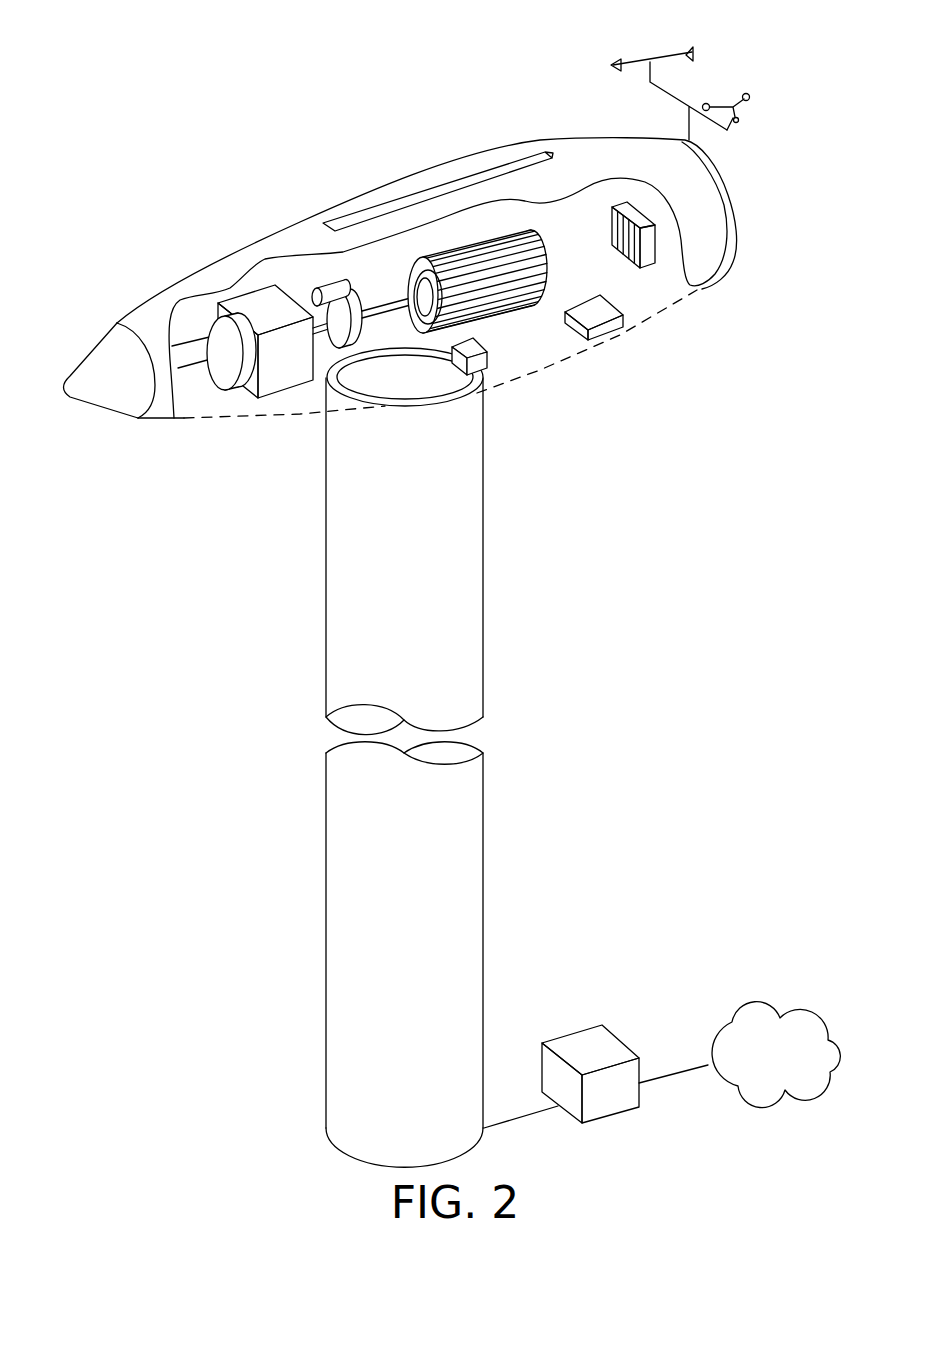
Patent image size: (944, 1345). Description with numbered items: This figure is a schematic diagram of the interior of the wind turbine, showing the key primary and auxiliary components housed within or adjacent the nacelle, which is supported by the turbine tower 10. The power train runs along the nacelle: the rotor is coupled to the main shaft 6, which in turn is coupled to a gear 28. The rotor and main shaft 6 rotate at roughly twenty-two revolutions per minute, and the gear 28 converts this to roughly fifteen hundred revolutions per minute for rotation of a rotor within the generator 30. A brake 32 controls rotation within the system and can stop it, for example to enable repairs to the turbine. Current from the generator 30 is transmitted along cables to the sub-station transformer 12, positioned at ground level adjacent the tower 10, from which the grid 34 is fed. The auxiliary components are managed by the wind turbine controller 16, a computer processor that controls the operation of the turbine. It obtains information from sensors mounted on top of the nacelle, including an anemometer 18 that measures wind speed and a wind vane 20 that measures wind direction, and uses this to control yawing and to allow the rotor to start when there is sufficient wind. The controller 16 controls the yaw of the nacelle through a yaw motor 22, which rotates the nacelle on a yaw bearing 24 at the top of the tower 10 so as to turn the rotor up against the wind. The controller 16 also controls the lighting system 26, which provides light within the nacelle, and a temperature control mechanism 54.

The main shaft 6 is at (200, 340).
The turbine tower 10 is at (337, 573).
The sub-station transformer 12 is at (577, 1032).
The wind turbine controller 16 is at (605, 331).
The anemometer 18 is at (723, 102).
The wind vane 20 is at (640, 58).
The yaw motor 22 is at (487, 367).
The yaw bearing 24 is at (430, 400).
The lighting system 26 is at (423, 187).
The gear 28 is at (253, 302).
The generator 30 is at (537, 244).
The brake 32 is at (323, 285).
The grid 34 is at (803, 1010).
The temperature control mechanism 54 is at (647, 263).